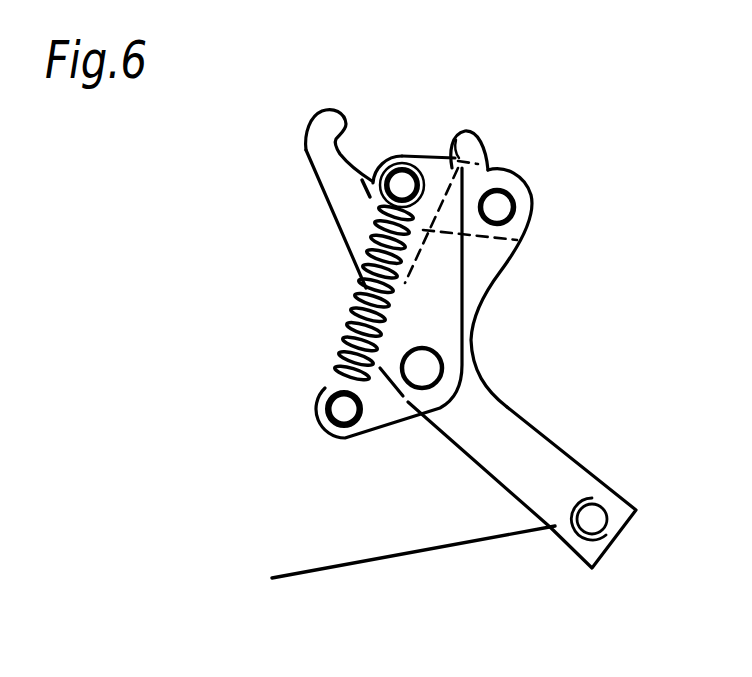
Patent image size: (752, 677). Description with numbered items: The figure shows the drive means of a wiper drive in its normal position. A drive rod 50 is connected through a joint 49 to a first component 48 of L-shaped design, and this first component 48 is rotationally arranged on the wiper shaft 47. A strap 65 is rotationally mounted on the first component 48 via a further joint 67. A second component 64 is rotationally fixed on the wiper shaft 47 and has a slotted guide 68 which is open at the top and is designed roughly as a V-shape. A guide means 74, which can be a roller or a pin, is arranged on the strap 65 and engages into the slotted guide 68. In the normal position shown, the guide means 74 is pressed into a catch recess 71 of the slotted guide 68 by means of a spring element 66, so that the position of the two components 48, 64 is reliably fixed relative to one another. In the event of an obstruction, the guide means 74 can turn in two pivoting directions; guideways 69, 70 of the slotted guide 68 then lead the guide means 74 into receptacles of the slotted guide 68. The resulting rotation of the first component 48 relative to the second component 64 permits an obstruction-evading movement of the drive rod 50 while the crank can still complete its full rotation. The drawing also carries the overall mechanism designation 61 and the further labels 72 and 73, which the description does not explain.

The wiper shaft 47 is at (424, 368).
The first component 48 is at (553, 438).
The joint 49 is at (600, 522).
The drive rod 50 is at (441, 549).
The locking mechanism 61 is at (266, 294).
The second component 64 is at (344, 238).
The strap 65 is at (489, 163).
The spring element 66 is at (352, 323).
The joint 67 is at (500, 208).
The slotted guide 68 is at (388, 136).
The guideway 69 is at (368, 176).
The guideway 70 is at (442, 187).
The catch recess 71 is at (382, 200).
The hook 72 is at (347, 128).
The lever 73 is at (450, 149).
The guide means 74 is at (421, 153).